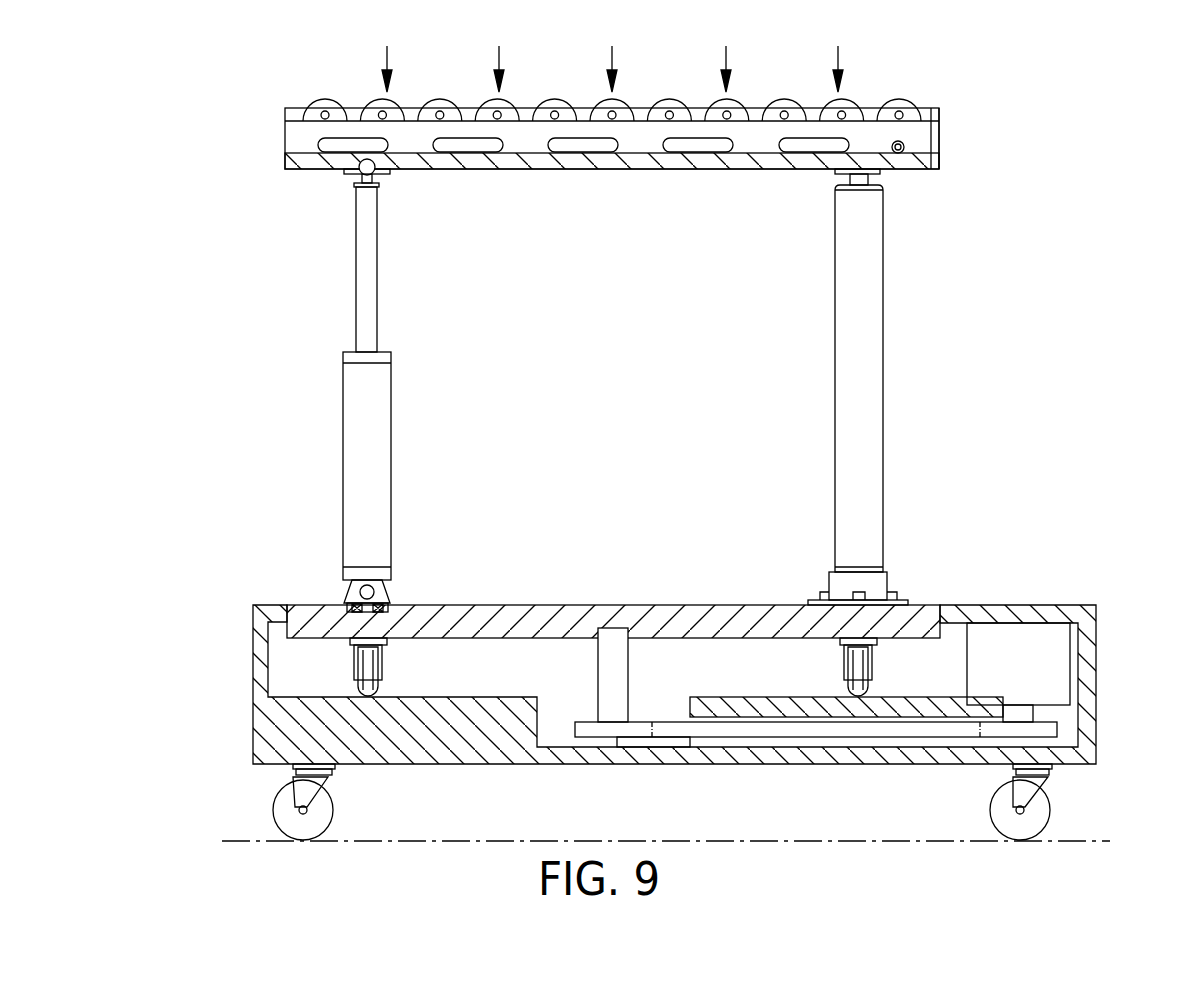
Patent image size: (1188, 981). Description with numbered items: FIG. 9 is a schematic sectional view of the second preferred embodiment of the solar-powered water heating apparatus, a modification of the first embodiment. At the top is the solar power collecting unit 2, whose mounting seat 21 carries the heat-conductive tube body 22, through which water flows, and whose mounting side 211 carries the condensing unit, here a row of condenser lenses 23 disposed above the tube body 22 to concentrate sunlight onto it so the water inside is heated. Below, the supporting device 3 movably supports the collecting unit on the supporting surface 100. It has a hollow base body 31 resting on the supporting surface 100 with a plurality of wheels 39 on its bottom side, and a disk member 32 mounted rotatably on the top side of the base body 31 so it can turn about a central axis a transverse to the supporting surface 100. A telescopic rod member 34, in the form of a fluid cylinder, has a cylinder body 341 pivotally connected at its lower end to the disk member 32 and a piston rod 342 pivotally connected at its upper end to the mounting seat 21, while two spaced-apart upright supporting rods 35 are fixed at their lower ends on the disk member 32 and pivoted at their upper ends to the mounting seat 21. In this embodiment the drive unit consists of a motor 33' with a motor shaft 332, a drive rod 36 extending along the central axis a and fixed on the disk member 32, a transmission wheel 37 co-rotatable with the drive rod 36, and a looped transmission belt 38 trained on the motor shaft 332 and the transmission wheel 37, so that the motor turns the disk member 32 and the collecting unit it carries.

The solar power collecting unit 2 is at (252, 128).
The mounting seat 21 is at (927, 170).
The mounting side 211 is at (935, 108).
The heat-conductive tube body 22 is at (703, 148).
The condenser lenses 23 is at (853, 102).
The supporting device 3 is at (932, 414).
The hollow base body 31 is at (772, 766).
The disk member 32 is at (693, 605).
The motor 33' is at (1068, 664).
The motor shaft 332 is at (1033, 712).
The telescopic rod member 34 is at (325, 383).
The cylinder body 341 is at (391, 430).
The piston rod 342 is at (356, 218).
The upright supporting rod 35 is at (836, 405).
The drive rod 36 is at (613, 667).
The transmission wheel 37 is at (620, 740).
The looped transmission belt 38 is at (897, 737).
The wheels 39 is at (272, 802).
The central axis a is at (613, 628).
The supporting surface 100 is at (907, 842).